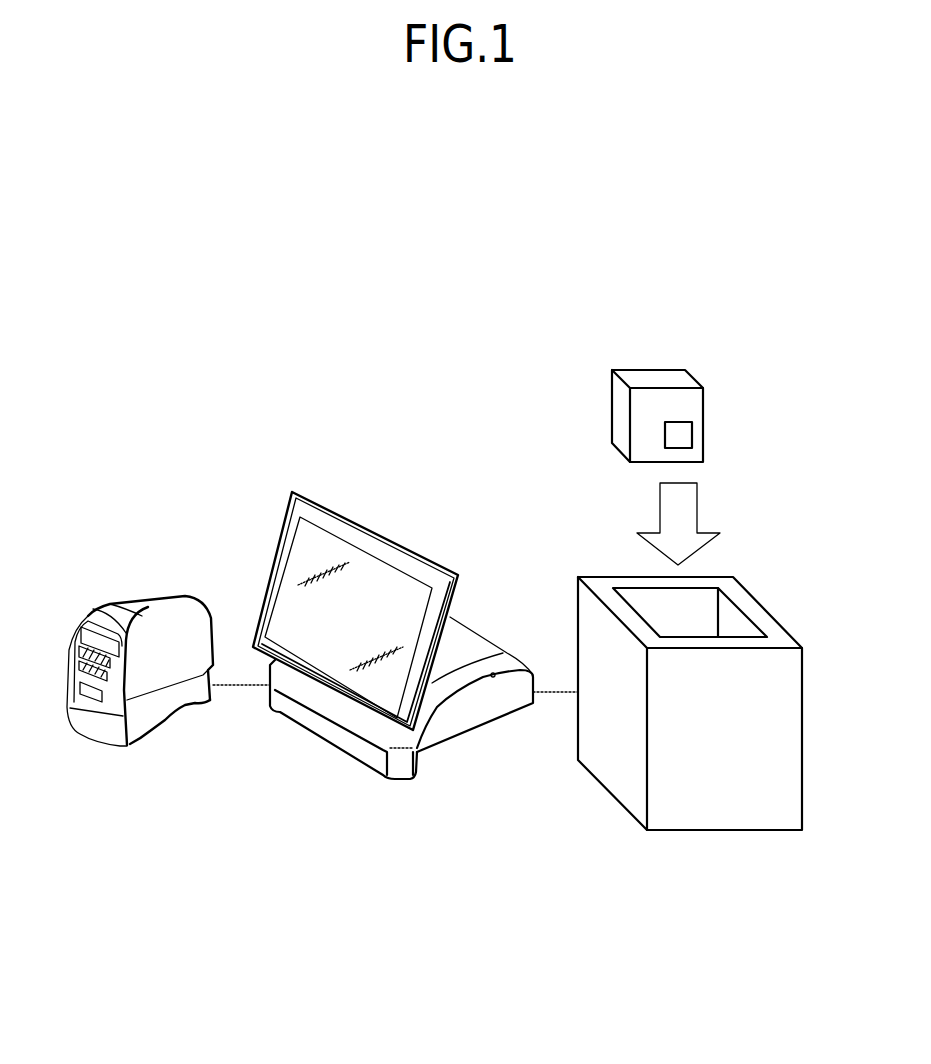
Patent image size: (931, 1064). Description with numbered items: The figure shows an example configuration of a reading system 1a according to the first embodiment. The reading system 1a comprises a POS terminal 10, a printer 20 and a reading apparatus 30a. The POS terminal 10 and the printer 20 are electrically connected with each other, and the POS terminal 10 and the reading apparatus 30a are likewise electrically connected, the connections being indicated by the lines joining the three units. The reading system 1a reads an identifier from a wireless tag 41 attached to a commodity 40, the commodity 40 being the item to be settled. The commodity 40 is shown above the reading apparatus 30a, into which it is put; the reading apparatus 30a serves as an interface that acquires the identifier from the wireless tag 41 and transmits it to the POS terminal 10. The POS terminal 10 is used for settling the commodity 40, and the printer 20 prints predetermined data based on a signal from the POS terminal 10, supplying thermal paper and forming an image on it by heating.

The reading system 1a is at (398, 336).
The POS terminal 10 is at (383, 530).
The printer 20 is at (138, 600).
The reading apparatus 30a is at (667, 817).
The commodity 40 is at (657, 378).
The wireless tag 41 is at (692, 435).